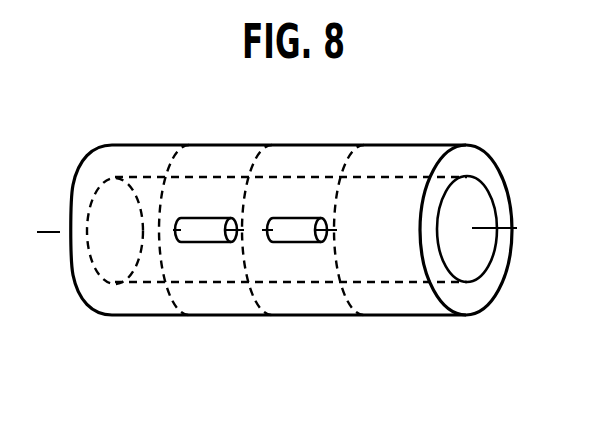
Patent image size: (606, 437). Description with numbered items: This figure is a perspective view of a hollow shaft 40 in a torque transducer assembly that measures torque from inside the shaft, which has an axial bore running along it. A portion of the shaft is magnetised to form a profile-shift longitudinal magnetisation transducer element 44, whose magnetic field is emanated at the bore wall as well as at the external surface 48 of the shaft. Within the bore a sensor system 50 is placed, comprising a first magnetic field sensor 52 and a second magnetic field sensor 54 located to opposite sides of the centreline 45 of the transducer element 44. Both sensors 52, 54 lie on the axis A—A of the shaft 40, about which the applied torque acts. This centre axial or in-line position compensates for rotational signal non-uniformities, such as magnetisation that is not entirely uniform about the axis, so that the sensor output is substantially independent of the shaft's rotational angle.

The hollow shaft 40 is at (506, 153).
The transducer element 44 is at (372, 141).
The centreline 45 is at (263, 296).
The external surface 48 is at (132, 144).
The sensor system 50 is at (246, 270).
The magnetic field sensor 52 is at (206, 232).
The magnetic field sensor 54 is at (297, 232).